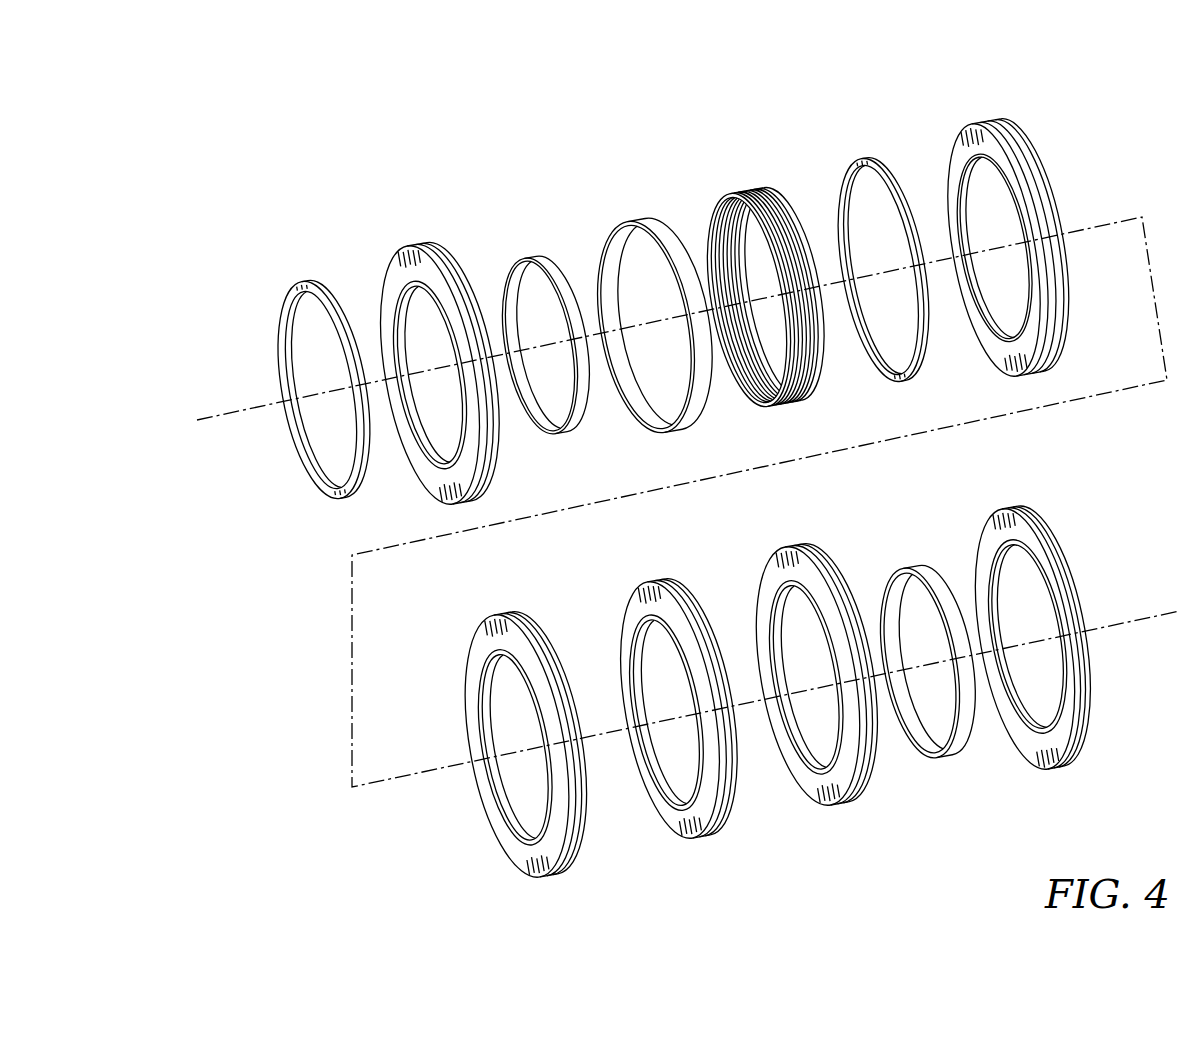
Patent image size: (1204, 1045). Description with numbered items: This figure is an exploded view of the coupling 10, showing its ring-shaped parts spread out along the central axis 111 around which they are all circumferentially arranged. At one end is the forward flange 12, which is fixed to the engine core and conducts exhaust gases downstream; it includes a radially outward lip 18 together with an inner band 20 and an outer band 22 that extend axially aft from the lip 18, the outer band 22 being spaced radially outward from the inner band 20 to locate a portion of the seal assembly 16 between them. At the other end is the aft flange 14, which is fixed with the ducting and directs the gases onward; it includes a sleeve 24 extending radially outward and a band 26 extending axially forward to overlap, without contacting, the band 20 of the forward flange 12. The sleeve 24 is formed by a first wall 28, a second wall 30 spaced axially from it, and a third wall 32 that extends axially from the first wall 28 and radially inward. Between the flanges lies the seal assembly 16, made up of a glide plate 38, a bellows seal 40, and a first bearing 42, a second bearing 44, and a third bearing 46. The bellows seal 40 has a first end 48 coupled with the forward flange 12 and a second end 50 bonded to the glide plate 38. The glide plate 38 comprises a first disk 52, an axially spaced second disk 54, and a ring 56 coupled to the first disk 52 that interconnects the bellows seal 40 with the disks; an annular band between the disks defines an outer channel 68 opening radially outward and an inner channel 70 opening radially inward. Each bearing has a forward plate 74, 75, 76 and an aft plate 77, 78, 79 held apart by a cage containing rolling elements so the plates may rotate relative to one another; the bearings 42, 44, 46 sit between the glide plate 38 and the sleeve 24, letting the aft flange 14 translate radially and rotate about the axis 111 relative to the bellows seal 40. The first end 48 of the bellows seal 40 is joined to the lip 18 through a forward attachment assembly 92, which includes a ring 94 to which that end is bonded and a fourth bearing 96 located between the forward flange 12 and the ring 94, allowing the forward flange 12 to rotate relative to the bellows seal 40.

The coupling 10 is at (398, 165).
The axis 111 is at (228, 415).
The forward flange 12 is at (405, 478).
The aft flange 14 is at (1034, 511).
The seal assembly 16 is at (882, 110).
The lip 18 is at (285, 288).
The inner band 20 is at (548, 250).
The outer band 22 is at (643, 203).
The sleeve 24 is at (1071, 531).
The band 26 is at (952, 769).
The first wall 28 is at (1086, 622).
The second wall 30 is at (978, 552).
The third wall 32 is at (976, 529).
The glide plate 38 is at (962, 115).
The bellows seal 40 is at (750, 185).
The first bearing 42 is at (465, 850).
The second bearing 44 is at (663, 863).
The third bearing 46 is at (796, 827).
The first end 48 is at (713, 200).
The second end 50 is at (792, 197).
The first disk 52 is at (947, 133).
The second disk 54 is at (1007, 117).
The ring 56 is at (902, 387).
The outer channel 68 is at (987, 115).
The inner channel 70 is at (975, 160).
The forward plate 74 is at (465, 637).
The forward plate 75 is at (617, 603).
The forward plate 76 is at (753, 573).
The aft plate 77 is at (562, 882).
The aft plate 78 is at (713, 847).
The aft plate 79 is at (853, 817).
The forward attachment assembly 92 is at (493, 458).
The ring 94 is at (377, 267).
The fourth bearing 96 is at (445, 252).